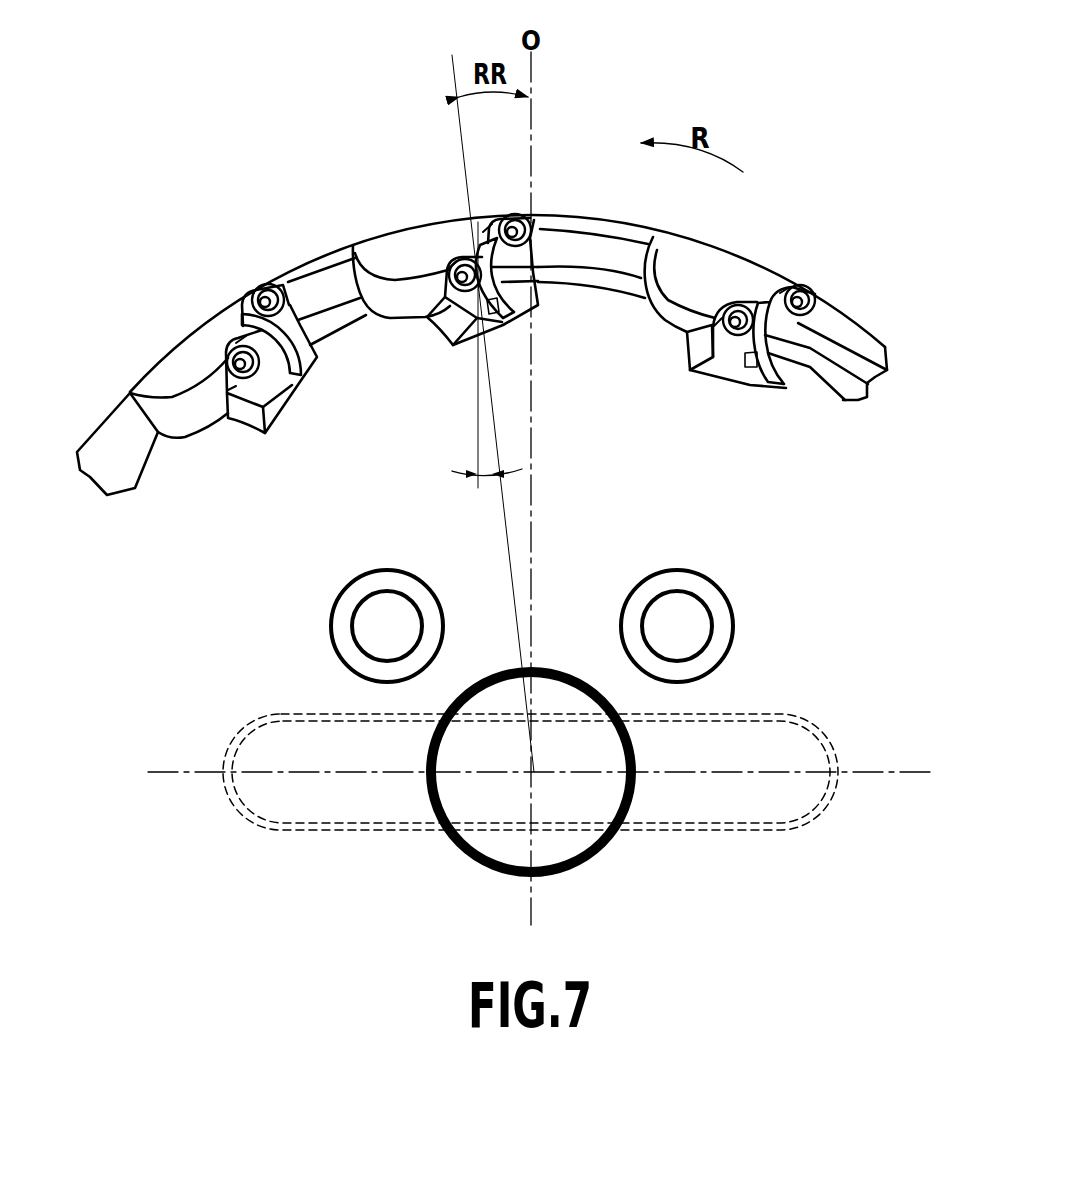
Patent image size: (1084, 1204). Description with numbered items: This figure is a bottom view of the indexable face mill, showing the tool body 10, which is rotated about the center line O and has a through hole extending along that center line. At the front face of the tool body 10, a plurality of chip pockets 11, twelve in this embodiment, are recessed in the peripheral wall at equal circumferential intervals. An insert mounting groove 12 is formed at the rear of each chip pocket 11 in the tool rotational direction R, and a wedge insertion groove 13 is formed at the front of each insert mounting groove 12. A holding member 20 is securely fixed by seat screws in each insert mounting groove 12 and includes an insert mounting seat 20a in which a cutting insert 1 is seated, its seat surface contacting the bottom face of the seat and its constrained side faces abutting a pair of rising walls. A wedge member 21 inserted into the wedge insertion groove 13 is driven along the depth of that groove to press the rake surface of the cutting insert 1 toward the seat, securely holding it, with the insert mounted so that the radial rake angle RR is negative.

The cutting insert 1 is at (234, 338).
The tool body 10 is at (831, 160).
The chip pocket 11 is at (178, 362).
The insert mounting groove 12 is at (290, 306).
The wedge insertion groove 13 is at (238, 392).
The holding member 20 is at (255, 274).
The insert mounting seat 20a is at (282, 378).
The wedge member 21 is at (247, 447).